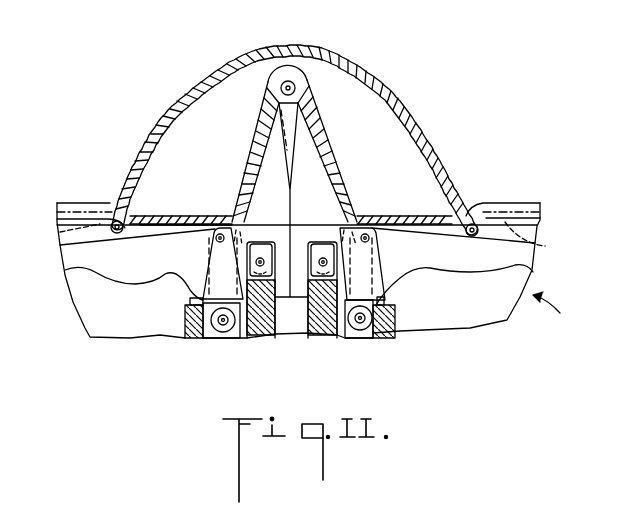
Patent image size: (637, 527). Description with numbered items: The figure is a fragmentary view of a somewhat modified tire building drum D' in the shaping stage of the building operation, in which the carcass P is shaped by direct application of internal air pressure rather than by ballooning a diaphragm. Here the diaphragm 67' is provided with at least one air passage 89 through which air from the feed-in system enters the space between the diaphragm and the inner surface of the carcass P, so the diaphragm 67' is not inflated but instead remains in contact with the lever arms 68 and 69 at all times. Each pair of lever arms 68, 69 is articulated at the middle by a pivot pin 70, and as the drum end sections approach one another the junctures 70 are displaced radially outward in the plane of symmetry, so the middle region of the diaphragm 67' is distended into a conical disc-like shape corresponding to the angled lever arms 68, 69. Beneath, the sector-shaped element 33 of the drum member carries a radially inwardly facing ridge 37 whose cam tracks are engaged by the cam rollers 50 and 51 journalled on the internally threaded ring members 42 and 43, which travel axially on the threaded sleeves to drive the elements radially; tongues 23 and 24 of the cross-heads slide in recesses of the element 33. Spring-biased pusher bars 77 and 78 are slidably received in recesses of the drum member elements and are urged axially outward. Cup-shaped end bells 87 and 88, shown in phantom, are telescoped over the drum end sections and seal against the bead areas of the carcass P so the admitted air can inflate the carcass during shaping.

The pivot pin 70 is at (292, 80).
The diaphragm 67' is at (255, 163).
The lever arm 68 is at (312, 176).
The lever arm 69 is at (333, 176).
The carcass P is at (414, 138).
The end bell 88 is at (84, 200).
The end bell 87 is at (497, 208).
The sector-shaped element 33 is at (157, 214).
The air passage 89 is at (182, 223).
The pusher bar 78 is at (67, 233).
The pusher bar 77 is at (545, 246).
The ridge 37 is at (107, 278).
The tongue 24 is at (260, 338).
The tongue 23 is at (312, 338).
The cam roller 51 is at (215, 338).
The cam roller 50 is at (362, 338).
The ring member 43 is at (183, 338).
The ring member 42 is at (395, 335).
The drum D' is at (557, 310).